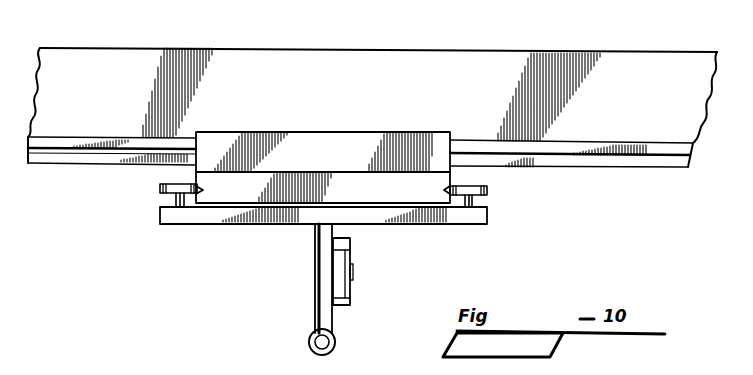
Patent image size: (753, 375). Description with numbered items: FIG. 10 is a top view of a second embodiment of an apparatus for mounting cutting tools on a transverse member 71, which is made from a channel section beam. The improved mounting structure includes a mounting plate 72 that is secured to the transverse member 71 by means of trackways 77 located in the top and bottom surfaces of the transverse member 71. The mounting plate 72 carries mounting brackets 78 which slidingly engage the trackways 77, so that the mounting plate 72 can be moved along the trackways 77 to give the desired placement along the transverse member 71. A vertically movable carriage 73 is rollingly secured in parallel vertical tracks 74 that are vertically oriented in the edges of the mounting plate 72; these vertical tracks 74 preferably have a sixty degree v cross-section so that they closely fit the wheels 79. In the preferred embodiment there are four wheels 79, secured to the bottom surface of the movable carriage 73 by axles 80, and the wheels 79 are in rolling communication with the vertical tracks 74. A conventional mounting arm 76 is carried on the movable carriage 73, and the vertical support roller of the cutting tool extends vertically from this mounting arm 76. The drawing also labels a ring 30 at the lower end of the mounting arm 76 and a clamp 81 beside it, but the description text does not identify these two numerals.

The transverse member 71 is at (428, 62).
The trackways 77 is at (556, 146).
The mounting brackets 78 is at (323, 138).
The mounting plate 72 is at (366, 192).
The vertically movable carriage 73 is at (452, 226).
The vertical tracks 74 is at (204, 190).
The wheels 79 is at (160, 186).
The axles 80 is at (174, 200).
The mounting arm 76 is at (309, 341).
The ring 30 is at (336, 342).
The clamp 81 is at (342, 290).